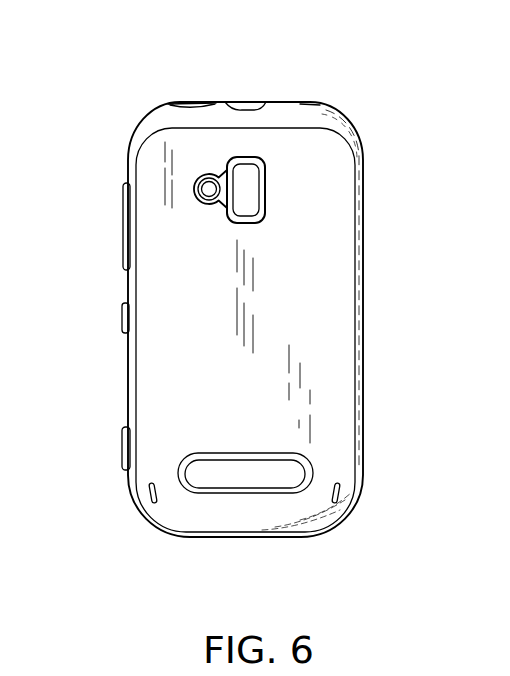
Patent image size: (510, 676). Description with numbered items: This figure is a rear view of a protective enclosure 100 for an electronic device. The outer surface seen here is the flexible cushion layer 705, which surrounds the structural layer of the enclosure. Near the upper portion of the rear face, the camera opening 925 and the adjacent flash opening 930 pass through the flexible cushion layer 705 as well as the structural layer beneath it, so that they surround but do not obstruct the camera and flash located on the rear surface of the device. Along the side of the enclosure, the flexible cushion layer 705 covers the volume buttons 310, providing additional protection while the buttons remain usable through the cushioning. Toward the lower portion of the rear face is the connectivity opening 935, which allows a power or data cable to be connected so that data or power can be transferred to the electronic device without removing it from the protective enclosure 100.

The protective enclosure 100 is at (141, 75).
The camera opening 925 is at (245, 190).
The flash opening 930 is at (209, 189).
The volume buttons 310 is at (125, 193).
The flexible cushion layer 705 is at (148, 397).
The connectivity opening 935 is at (232, 473).